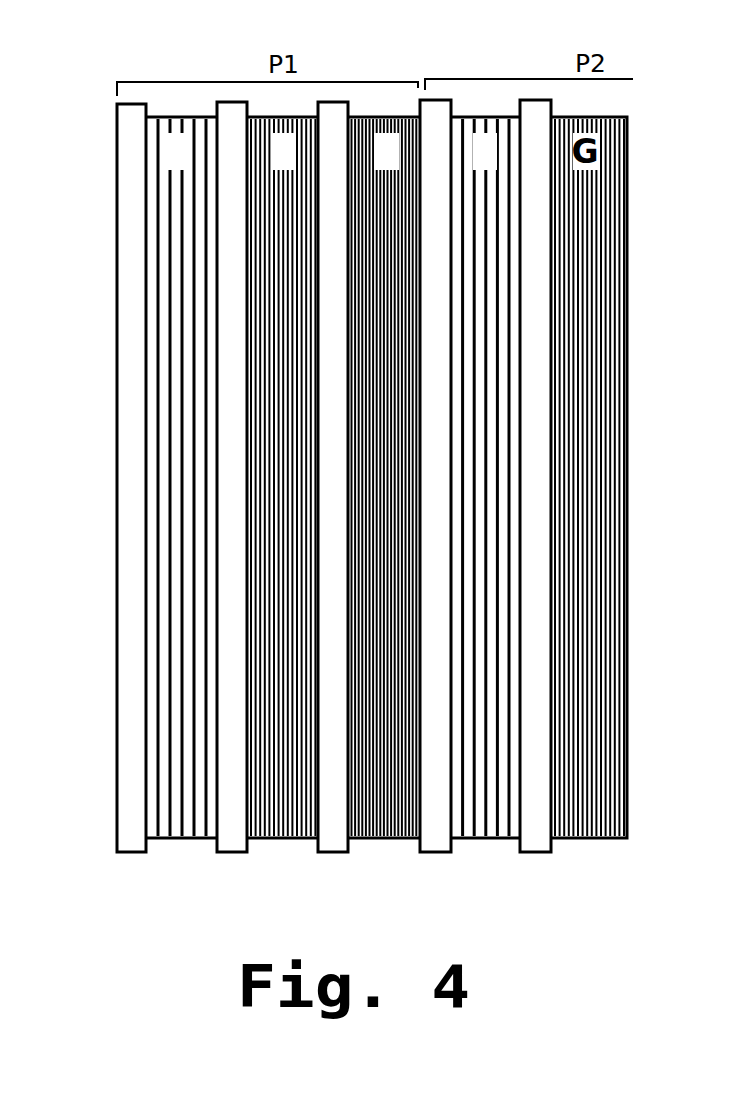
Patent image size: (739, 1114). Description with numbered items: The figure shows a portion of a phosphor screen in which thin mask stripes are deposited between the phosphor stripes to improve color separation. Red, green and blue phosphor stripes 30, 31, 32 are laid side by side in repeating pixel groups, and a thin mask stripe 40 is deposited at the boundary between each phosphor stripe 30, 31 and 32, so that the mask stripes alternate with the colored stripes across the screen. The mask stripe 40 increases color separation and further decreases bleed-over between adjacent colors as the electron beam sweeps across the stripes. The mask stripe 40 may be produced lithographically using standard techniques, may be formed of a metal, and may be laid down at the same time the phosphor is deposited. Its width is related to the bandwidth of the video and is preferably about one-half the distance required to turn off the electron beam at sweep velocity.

The phosphor stripe 30 is at (164, 117).
The phosphor stripe 31 is at (262, 117).
The phosphor stripe 32 is at (378, 117).
The thin mask stripe 40 is at (117, 180).